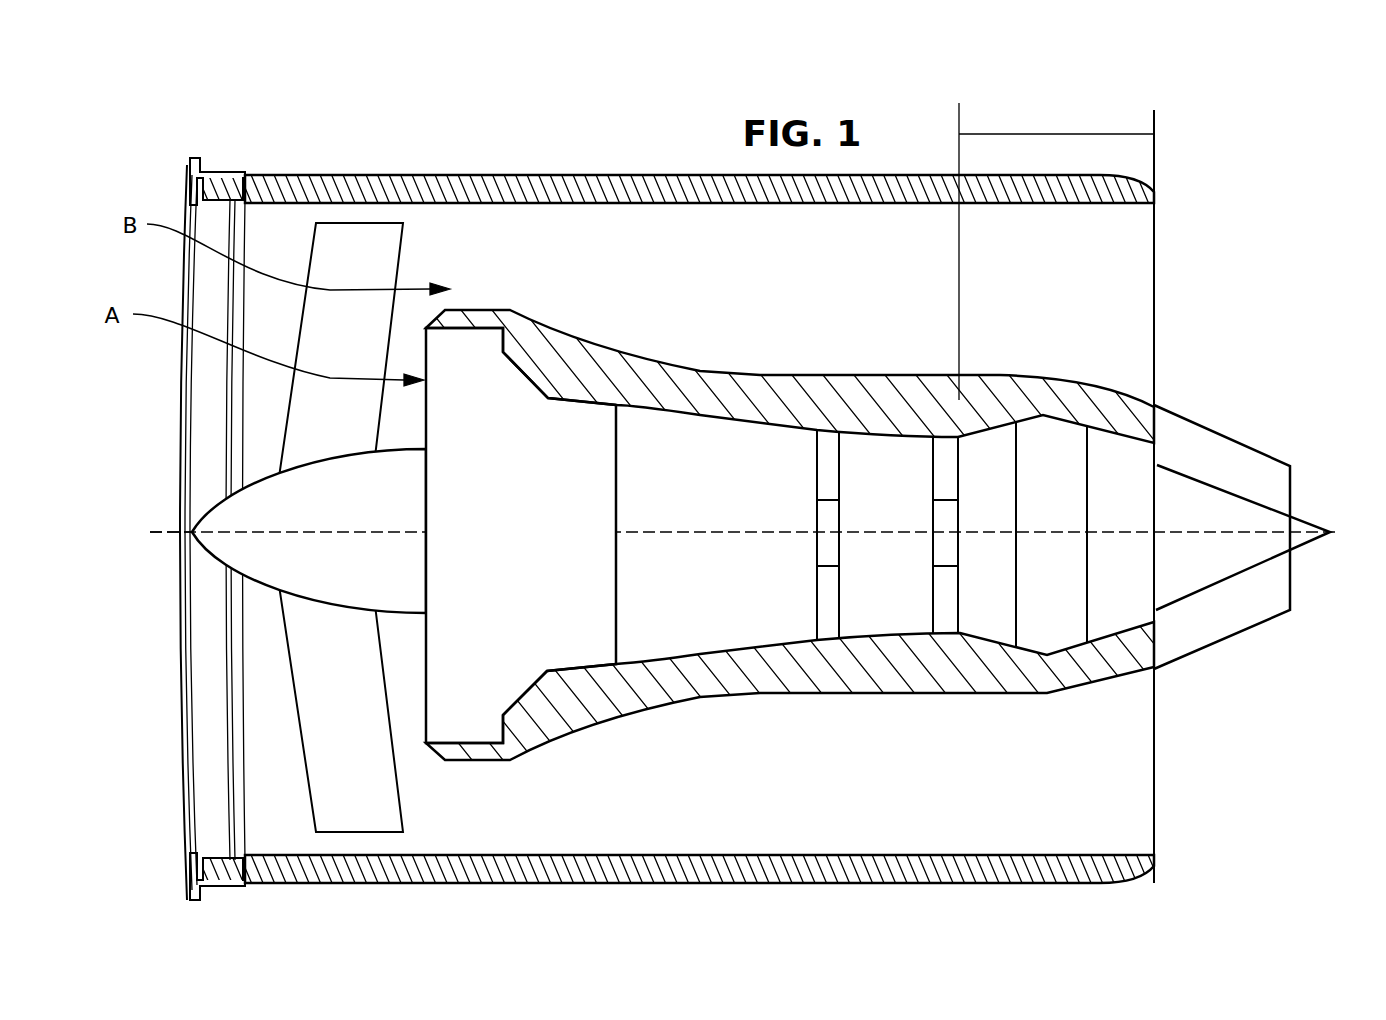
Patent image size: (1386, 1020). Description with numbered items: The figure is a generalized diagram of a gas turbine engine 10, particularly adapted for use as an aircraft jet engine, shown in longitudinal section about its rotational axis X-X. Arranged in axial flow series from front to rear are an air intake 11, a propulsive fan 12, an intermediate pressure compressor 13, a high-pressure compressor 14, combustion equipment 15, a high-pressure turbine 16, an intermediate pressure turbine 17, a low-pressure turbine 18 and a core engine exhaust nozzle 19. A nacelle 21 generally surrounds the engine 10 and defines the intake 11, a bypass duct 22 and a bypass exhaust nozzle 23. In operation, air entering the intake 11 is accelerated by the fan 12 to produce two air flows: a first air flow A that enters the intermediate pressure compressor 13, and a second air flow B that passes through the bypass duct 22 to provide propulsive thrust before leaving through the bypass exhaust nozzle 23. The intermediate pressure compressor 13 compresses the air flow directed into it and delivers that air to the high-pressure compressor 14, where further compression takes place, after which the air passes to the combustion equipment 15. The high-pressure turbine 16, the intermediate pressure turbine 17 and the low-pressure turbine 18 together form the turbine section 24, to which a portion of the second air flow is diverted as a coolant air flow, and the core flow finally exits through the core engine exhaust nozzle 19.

The gas turbine engine 10 is at (188, 82).
The air intake 11 is at (178, 386).
The propulsive fan 12 is at (287, 411).
The intermediate pressure compressor 13 is at (535, 690).
The high-pressure compressor 14 is at (713, 653).
The combustion equipment 15 is at (873, 642).
The high-pressure turbine 16 is at (993, 643).
The intermediate pressure turbine 17 is at (1067, 658).
The low-pressure turbine 18 is at (1127, 653).
The core engine exhaust nozzle 19 is at (1200, 590).
The nacelle 21 is at (517, 177).
The bypass duct 22 is at (415, 267).
The bypass exhaust nozzle 23 is at (1222, 433).
The turbine section 24 is at (1043, 134).